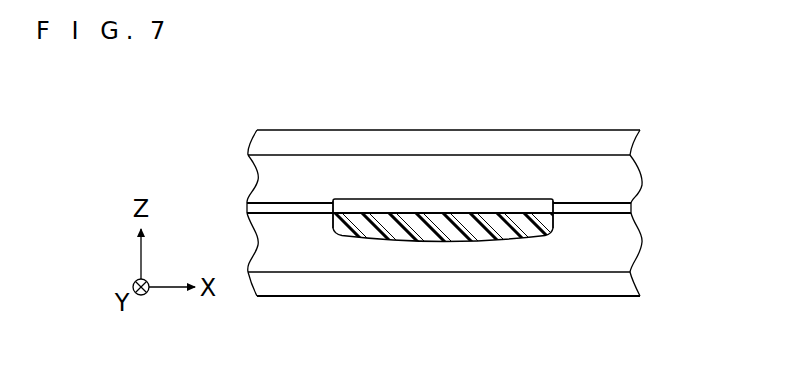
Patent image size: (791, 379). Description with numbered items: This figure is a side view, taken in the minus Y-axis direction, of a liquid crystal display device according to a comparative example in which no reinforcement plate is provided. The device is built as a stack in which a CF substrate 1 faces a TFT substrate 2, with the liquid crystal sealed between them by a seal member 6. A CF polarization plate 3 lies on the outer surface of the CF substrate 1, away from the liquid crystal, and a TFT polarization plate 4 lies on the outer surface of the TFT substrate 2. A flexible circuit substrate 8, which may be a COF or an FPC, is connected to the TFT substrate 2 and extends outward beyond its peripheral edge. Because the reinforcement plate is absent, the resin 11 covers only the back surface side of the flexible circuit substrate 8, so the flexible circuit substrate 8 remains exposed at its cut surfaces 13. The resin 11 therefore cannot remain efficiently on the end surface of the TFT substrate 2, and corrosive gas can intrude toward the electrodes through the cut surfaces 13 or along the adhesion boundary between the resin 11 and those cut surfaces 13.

The CF substrate 1 is at (622, 178).
The TFT substrate 2 is at (622, 245).
The CF polarization plate 3 is at (622, 143).
The TFT polarization plate 4 is at (622, 283).
The seal member 6 is at (622, 210).
The flexible circuit substrate 8 is at (447, 205).
The resin 11 is at (448, 215).
The cut surfaces 13 is at (340, 205).